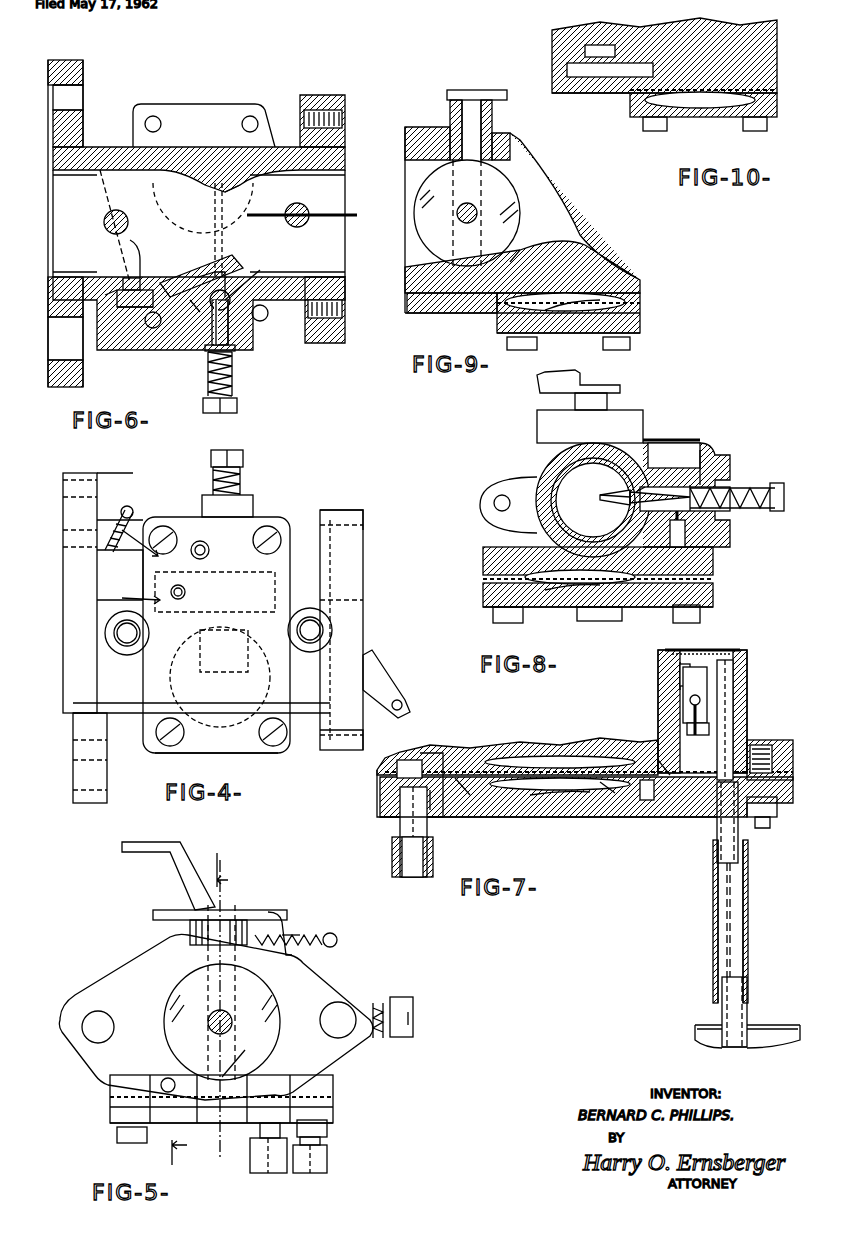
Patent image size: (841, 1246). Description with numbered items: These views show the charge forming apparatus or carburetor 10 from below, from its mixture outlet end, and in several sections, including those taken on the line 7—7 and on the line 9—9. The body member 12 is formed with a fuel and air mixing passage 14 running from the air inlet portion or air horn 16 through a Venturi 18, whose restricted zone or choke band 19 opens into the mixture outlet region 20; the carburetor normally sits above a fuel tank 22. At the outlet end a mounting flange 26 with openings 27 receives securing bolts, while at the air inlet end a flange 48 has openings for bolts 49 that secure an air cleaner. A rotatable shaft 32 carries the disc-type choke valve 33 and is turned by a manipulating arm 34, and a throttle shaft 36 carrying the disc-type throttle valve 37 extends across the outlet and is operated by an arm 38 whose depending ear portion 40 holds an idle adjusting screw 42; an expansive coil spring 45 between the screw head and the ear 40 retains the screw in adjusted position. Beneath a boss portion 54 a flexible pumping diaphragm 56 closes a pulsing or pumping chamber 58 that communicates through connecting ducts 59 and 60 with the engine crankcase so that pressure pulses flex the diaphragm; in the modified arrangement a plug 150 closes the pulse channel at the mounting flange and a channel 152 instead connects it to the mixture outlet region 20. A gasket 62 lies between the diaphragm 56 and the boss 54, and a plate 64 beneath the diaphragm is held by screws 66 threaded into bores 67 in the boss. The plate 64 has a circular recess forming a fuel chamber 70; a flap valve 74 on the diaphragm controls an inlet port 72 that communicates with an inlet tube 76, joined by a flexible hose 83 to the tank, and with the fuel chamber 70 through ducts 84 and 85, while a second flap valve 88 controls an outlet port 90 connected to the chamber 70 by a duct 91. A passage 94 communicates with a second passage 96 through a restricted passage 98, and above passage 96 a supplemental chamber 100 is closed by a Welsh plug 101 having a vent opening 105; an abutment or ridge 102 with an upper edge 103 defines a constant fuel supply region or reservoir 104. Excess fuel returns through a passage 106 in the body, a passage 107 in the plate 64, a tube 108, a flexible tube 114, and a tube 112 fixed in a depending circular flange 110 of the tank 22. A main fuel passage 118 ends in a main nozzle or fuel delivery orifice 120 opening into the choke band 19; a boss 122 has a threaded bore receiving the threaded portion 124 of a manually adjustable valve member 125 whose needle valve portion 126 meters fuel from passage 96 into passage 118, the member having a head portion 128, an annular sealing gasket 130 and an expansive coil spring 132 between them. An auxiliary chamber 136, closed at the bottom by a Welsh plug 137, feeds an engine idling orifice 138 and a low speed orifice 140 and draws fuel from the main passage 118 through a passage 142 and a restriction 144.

In FIG. 4, the section line 7— 7 is at (136, 562).
In FIG. 5, the section line 9— 9 is at (205, 1012).
In FIG. 6, the carburetor 10 is at (271, 100).
In FIG. 4, the carburetor 10 is at (288, 506).
In FIG. 6, the body member 12 is at (300, 147).
In FIG. 9, the body member 12 is at (630, 275).
In FIG. 8, the body member 12 is at (540, 445).
In FIG. 4, the body member 12 is at (130, 713).
In FIG. 5, the body member 12 is at (333, 1085).
In FIG. 6, the fuel and air mixing passage 14 is at (180, 203).
In FIG. 6, the air inlet portion 16 is at (297, 221).
In FIG. 6, the Venturi 18 is at (248, 184).
In FIG. 6, the choke band 19 is at (214, 210).
In FIG. 8, the choke band 19 is at (555, 478).
In FIG. 6, the mixture outlet region 20 is at (80, 202).
In FIG. 10, the mixture outlet region 20 is at (560, 30).
In FIG. 5, the mixture outlet region 20 is at (266, 1050).
In FIG. 7, the fuel tank 22 is at (700, 1025).
In FIG. 6, the mounting flange 26 is at (84, 121).
In FIG. 4, the mounting flange 26 is at (97, 492).
In FIG. 5, the mounting flange 26 is at (120, 980).
In FIG. 6, the openings 27 is at (84, 82).
In FIG. 4, the openings 27 is at (63, 522).
In FIG. 5, the openings 27 is at (88, 1020).
In FIG. 6, the rotatable shaft 32 is at (297, 203).
In FIG. 8, the rotatable shaft 32 is at (608, 398).
In FIG. 4, the rotatable shaft 32 is at (314, 618).
In FIG. 6, the choke valve 33 is at (340, 212).
In FIG. 8, the manipulating arm 34 is at (540, 393).
In FIG. 4, the manipulating arm 34 is at (375, 670).
In FIG. 5, the manipulating arm 34 is at (150, 862).
In FIG. 6, the throttle shaft 36 is at (104, 229).
In FIG. 4, the throttle shaft 36 is at (118, 643).
In FIG. 5, the throttle shaft 36 is at (228, 910).
In FIG. 6, the throttle valve 37 is at (105, 190).
In FIG. 9, the throttle valve 37 is at (450, 112).
In FIG. 5, the throttle valve 37 is at (255, 985).
In FIG. 9, the arm 38 is at (492, 90).
In FIG. 5, the arm 38 is at (278, 905).
In FIG. 5, the depending ear portion 40 is at (292, 927).
In FIG. 4, the screw 42 is at (130, 508).
In FIG. 5, the screw 42 is at (337, 938).
In FIG. 5, the expansive coil spring 45 is at (318, 935).
In FIG. 6, the flange 48 is at (343, 95).
In FIG. 8, the flange 48 is at (490, 482).
In FIG. 4, the flange 48 is at (363, 580).
In FIG. 6, the bolts 49 is at (320, 95).
In FIG. 8, the bolts 49 is at (494, 504).
In FIG. 4, the bolts 49 is at (363, 530).
In FIG. 6, the boss portion 54 is at (212, 104).
In FIG. 8, the boss portion 54 is at (483, 555).
In FIG. 7, the boss portion 54 is at (537, 745).
In FIG. 9, the flexible pumping diaphragm 56 is at (641, 318).
In FIG. 8, the flexible pumping diaphragm 56 is at (483, 595).
In FIG. 7, the flexible pumping diaphragm 56 is at (505, 777).
In FIG. 5, the flexible pumping diaphragm 56 is at (110, 1112).
In FIG. 9, the pulsing or pumping chamber 58 is at (640, 290).
In FIG. 8, the pulsing or pumping chamber 58 is at (530, 568).
In FIG. 7, the pulsing or pumping chamber 58 is at (580, 745).
In FIG. 9, the connecting duct 59 is at (548, 252).
In FIG. 9, the connecting duct 60 is at (440, 313).
In FIG. 5, the connecting duct 60 is at (160, 1080).
In FIG. 9, the gasket 62 is at (642, 303).
In FIG. 8, the gasket 62 is at (483, 577).
In FIG. 7, the gasket 62 is at (470, 772).
In FIG. 5, the gasket 62 is at (110, 1095).
In FIG. 9, the plate 64 is at (497, 330).
In FIG. 8, the plate 64 is at (713, 596).
In FIG. 7, the plate 64 is at (672, 817).
In FIG. 4, the plate 64 is at (210, 753).
In FIG. 5, the plate 64 is at (112, 1122).
In FIG. 6, the screws 66 is at (155, 116).
In FIG. 9, the screws 66 is at (632, 344).
In FIG. 8, the screws 66 is at (493, 620).
In FIG. 7, the screws 66 is at (770, 822).
In FIG. 4, the screws 66 is at (168, 525).
In FIG. 5, the screws 66 is at (117, 1142).
In FIG. 7, the threaded bores 67 is at (793, 757).
In FIG. 9, the fuel chamber 70 is at (555, 333).
In FIG. 8, the fuel chamber 70 is at (540, 600).
In FIG. 7, the fuel chamber 70 is at (535, 810).
In FIG. 4, the fuel chamber 70 is at (185, 706).
In FIG. 7, the inlet port 72 is at (400, 780).
In FIG. 4, the inlet port 72 is at (186, 596).
In FIG. 7, the flap valve 74 is at (400, 765).
In FIG. 7, the inlet tube 76 is at (400, 828).
In FIG. 5, the inlet tube 76 is at (260, 1137).
In FIG. 7, the flexible hose 83 is at (433, 853).
In FIG. 5, the flexible hose 83 is at (250, 1163).
In FIG. 7, the duct 84 is at (433, 810).
In FIG. 7, the duct 85 is at (475, 810).
In FIG. 7, the second flap valve 88 is at (665, 755).
In FIG. 7, the outlet port 90 is at (648, 810).
In FIG. 7, the duct 91 is at (605, 810).
In FIG. 8, the passage 94 is at (690, 555).
In FIG. 7, the passage 94 is at (690, 745).
In FIG. 6, the second passage 96 is at (232, 298).
In FIG. 8, the second passage 96 is at (725, 487).
In FIG. 7, the second passage 96 is at (689, 700).
In FIG. 8, the restricted passage 98 is at (686, 535).
In FIG. 7, the restricted passage 98 is at (709, 728).
In FIG. 7, the supplemental chamber 100 is at (735, 665).
In FIG. 8, the Welsh plug 101 is at (683, 440).
In FIG. 7, the Welsh plug 101 is at (695, 650).
In FIG. 8, the abutment or ridge 102 is at (680, 460).
In FIG. 7, the abutment or ridge 102 is at (707, 678).
In FIG. 7, the upper edge 103 is at (680, 666).
In FIG. 7, the constant fuel supply region 104 is at (681, 674).
In FIG. 7, the vent opening 105 is at (720, 652).
In FIG. 6, the return passage 106 is at (212, 318).
In FIG. 7, the return passage 106 is at (733, 695).
In FIG. 7, the passage 107 is at (777, 805).
In FIG. 4, the passage 107 is at (207, 545).
In FIG. 7, the tube 108 is at (740, 832).
In FIG. 5, the tube 108 is at (320, 1141).
In FIG. 7, the second depending circular flange 110 is at (748, 1036).
In FIG. 7, the tube 112 is at (748, 1005).
In FIG. 7, the flexible tube 114 is at (748, 908).
In FIG. 5, the flexible tube 114 is at (327, 1160).
In FIG. 6, the main fuel passage 118 is at (210, 260).
In FIG. 8, the main fuel passage 118 is at (628, 496).
In FIG. 6, the main nozzle 120 is at (215, 260).
In FIG. 8, the main nozzle 120 is at (622, 500).
In FIG. 6, the boss 122 is at (236, 350).
In FIG. 8, the boss 122 is at (718, 455).
In FIG. 4, the boss 122 is at (253, 500).
In FIG. 6, the threaded portion 124 is at (230, 338).
In FIG. 6, the manually adjustable valve member 125 is at (206, 375).
In FIG. 8, the manually adjustable valve member 125 is at (735, 512).
In FIG. 4, the manually adjustable valve member 125 is at (213, 478).
In FIG. 6, the needle valve portion 126 is at (265, 270).
In FIG. 6, the head portion 128 is at (238, 408).
In FIG. 8, the head portion 128 is at (790, 478).
In FIG. 4, the head portion 128 is at (243, 458).
In FIG. 5, the head portion 128 is at (400, 997).
In FIG. 6, the annular sealing gasket 130 is at (212, 330).
In FIG. 8, the annular sealing gasket 130 is at (735, 492).
In FIG. 6, the expansive coil spring 132 is at (235, 388).
In FIG. 8, the expansive coil spring 132 is at (772, 512).
In FIG. 4, the expansive coil spring 132 is at (240, 478).
In FIG. 5, the expansive coil spring 132 is at (378, 1000).
In FIG. 6, the auxiliary chamber 136 is at (115, 297).
In FIG. 6, the Welsh plug 137 is at (125, 308).
In FIG. 6, the engine idling orifice 138 is at (118, 285).
In FIG. 6, the low speed orifice 140 is at (125, 280).
In FIG. 6, the duct 142 is at (190, 303).
In FIG. 8, the duct 142 is at (635, 490).
In FIG. 6, the restriction 144 is at (152, 250).
In FIG. 10, the plug 150 is at (567, 70).
In FIG. 10, the channel 152 is at (585, 50).